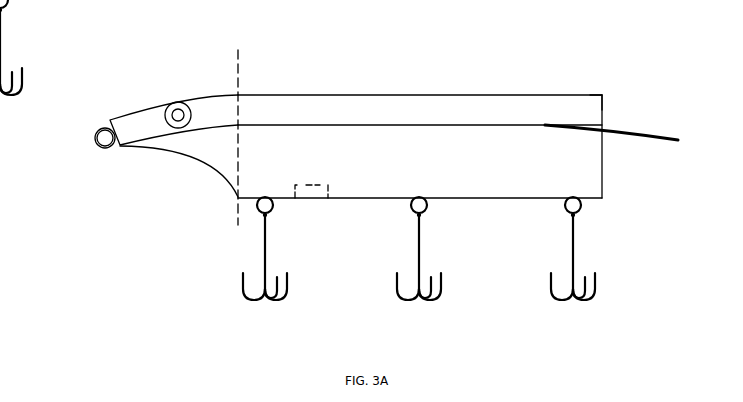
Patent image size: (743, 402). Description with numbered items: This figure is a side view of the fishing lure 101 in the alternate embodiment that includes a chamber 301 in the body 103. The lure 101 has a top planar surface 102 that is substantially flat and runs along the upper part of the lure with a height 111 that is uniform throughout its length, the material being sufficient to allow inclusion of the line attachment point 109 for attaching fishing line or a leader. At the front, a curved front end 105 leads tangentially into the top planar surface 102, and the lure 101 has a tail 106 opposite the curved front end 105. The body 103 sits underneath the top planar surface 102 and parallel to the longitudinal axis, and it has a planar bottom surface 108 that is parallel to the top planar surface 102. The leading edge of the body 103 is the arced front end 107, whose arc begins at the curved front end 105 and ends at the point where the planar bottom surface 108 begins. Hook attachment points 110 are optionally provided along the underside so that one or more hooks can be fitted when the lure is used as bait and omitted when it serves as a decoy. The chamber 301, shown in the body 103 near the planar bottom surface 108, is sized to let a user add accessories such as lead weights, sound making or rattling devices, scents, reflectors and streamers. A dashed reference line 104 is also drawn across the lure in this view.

The fishing lure 101 is at (420, 75).
The top planar surface 102 is at (420, 78).
The body 103 is at (635, 146).
The dividing line 104 is at (269, 125).
The curved front end 105 is at (158, 107).
The tail 106 is at (632, 120).
The arced front end 107 is at (179, 173).
The planar bottom surface 108 is at (420, 218).
The line attachment point 109 is at (80, 131).
The hook attachment points 110 is at (320, 150).
The height 111 is at (627, 93).
The chamber 301 is at (328, 212).